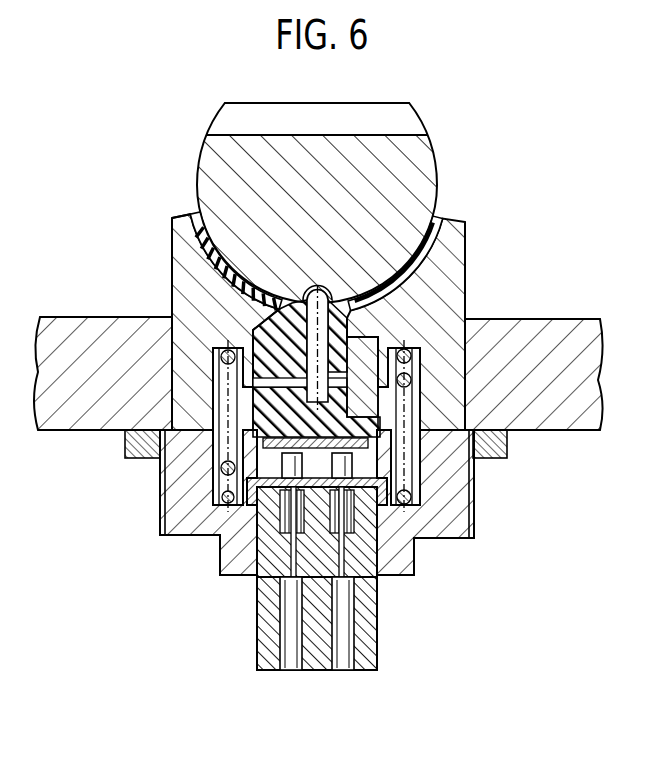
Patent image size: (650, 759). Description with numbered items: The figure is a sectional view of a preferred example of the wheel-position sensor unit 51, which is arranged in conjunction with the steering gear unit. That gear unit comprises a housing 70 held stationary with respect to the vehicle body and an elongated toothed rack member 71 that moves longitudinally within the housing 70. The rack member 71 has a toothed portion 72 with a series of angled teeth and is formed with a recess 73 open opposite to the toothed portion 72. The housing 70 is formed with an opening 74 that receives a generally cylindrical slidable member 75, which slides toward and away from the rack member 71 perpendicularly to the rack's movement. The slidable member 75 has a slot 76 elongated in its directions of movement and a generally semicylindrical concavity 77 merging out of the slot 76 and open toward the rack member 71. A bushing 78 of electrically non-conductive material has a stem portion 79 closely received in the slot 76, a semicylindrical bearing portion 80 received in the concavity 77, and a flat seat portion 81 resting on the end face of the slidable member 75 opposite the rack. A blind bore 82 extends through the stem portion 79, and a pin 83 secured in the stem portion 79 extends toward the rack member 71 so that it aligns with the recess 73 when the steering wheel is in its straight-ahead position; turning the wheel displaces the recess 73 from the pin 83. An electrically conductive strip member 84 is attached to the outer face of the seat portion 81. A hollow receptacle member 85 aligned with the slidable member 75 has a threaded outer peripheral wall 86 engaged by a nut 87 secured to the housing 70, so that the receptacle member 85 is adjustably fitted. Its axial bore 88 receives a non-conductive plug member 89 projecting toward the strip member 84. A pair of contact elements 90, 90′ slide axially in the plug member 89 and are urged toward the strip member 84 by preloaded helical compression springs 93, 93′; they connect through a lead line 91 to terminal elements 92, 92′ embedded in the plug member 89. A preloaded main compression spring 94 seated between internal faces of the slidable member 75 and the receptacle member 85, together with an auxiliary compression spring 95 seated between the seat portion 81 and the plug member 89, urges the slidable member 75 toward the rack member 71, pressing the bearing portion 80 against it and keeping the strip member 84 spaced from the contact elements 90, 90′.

The wheel-position sensor unit 51 is at (480, 545).
The housing 70 is at (84, 317).
The rack member 71 is at (432, 151).
The toothed portion 72 is at (338, 103).
The recess 73 is at (304, 294).
The opening 74 is at (172, 326).
The slidable member 75 is at (467, 249).
The slot 76 is at (352, 350).
The semicylindrical concavity 77 is at (196, 212).
The bushing 78 is at (440, 213).
The stem portion 79 is at (272, 350).
The semicylindrical bearing portion 80 is at (193, 228).
The seat portion 81 is at (373, 432).
The blind bore 82 is at (338, 298).
The pin 83 is at (317, 292).
The conductive strip member 84 is at (360, 450).
The receptacle member 85 is at (170, 537).
The threaded outer peripheral wall 86 is at (160, 530).
The nut 87 is at (507, 450).
The axial bore 88 is at (373, 576).
The plug member 89 is at (378, 650).
The contact element 90 is at (353, 472).
The contact element 90′ is at (283, 472).
The lead line 91 is at (297, 553).
The terminal element 92 is at (337, 672).
The terminal element 92′ is at (289, 672).
The helical compression spring 93 is at (362, 535).
The helical compression spring 93′ is at (268, 560).
The main compression spring 94 is at (221, 471).
The auxiliary compression spring 95 is at (252, 503).